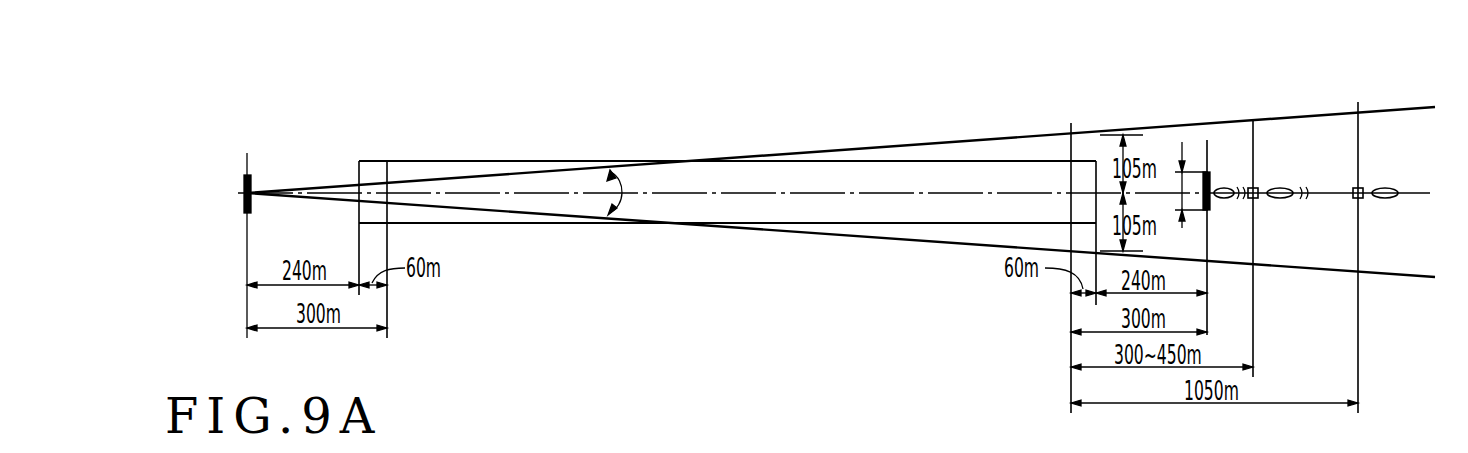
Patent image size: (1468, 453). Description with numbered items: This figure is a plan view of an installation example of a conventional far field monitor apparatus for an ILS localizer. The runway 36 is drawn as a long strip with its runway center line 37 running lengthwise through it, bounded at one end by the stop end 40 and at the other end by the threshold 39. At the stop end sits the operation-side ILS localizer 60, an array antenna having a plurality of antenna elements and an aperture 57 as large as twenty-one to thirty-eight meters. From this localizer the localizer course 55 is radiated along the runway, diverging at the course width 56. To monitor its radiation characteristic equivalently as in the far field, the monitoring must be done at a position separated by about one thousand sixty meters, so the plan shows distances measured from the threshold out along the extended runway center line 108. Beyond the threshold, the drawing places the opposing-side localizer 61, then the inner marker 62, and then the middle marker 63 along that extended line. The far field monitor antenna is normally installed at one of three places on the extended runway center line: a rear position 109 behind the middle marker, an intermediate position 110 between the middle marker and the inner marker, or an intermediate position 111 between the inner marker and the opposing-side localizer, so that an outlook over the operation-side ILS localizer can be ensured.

The runway 36 is at (745, 172).
The runway center line 37 is at (745, 195).
The threshold 39 is at (1057, 160).
The stop end 40 is at (388, 160).
The localizer course 55 is at (888, 183).
The course width 56 is at (622, 187).
The aperture 57 is at (1178, 184).
The operation-side ILS localizer 60 is at (249, 173).
The opposing-side localizer 61 is at (1216, 170).
The inner marker 62 is at (1258, 186).
The middle marker 63 is at (1363, 186).
The extended runway center line 108 is at (1417, 192).
The rear position 109 is at (1388, 198).
The intermediate position 110 is at (1283, 198).
The intermediate position 111 is at (1224, 198).